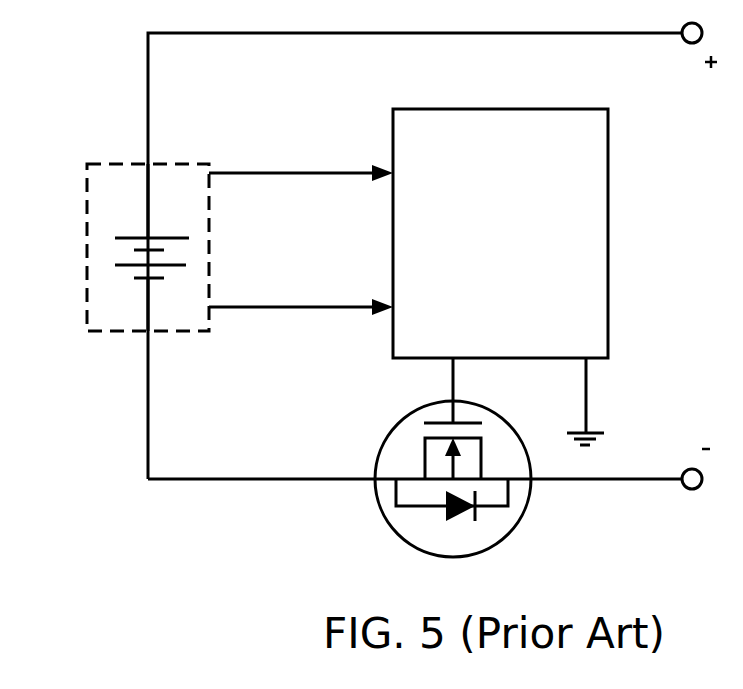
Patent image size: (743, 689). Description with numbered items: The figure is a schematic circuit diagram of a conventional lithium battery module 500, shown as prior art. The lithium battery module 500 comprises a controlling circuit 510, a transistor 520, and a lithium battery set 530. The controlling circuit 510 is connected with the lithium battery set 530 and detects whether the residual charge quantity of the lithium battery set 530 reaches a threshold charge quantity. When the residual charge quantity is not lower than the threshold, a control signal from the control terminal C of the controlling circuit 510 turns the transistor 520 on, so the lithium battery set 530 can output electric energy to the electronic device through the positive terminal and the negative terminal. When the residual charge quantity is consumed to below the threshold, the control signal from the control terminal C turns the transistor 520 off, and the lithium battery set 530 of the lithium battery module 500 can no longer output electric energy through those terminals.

The lithium battery module 500 is at (202, 493).
The controlling circuit 510 is at (393, 210).
The transistor 520 is at (380, 513).
The lithium battery set 530 is at (87, 321).